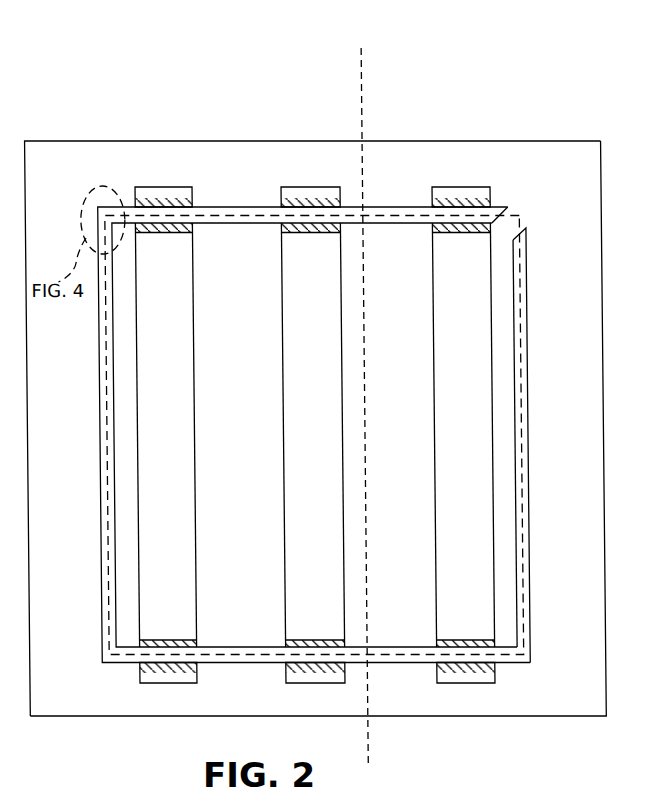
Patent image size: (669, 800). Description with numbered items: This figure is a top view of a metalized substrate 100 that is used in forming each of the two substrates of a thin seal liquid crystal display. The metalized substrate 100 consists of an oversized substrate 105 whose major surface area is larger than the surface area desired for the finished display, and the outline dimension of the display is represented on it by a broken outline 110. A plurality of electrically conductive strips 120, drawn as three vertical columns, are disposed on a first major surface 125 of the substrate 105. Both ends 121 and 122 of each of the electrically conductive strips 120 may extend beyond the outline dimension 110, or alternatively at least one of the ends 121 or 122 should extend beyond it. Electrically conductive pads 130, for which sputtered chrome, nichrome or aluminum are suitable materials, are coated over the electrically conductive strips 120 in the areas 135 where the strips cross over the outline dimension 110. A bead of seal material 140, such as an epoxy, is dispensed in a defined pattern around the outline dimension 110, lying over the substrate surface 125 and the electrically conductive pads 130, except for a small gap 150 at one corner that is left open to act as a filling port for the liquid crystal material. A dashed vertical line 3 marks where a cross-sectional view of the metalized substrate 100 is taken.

The metalized substrate 100 is at (167, 96).
The oversized substrate 105 is at (323, 141).
The broken outline 110 is at (100, 445).
The electrically conductive strips 120 is at (195, 434).
The end of electrically conductive strip 121 is at (155, 187).
The end of electrically conductive strip 122 is at (138, 682).
The first major surface 125 is at (590, 661).
The electrically conductive pads 130 is at (281, 207).
The areas 135 is at (111, 174).
The seal material bead 140 is at (100, 530).
The gap 150 is at (536, 195).
The line 3 is at (378, 746).